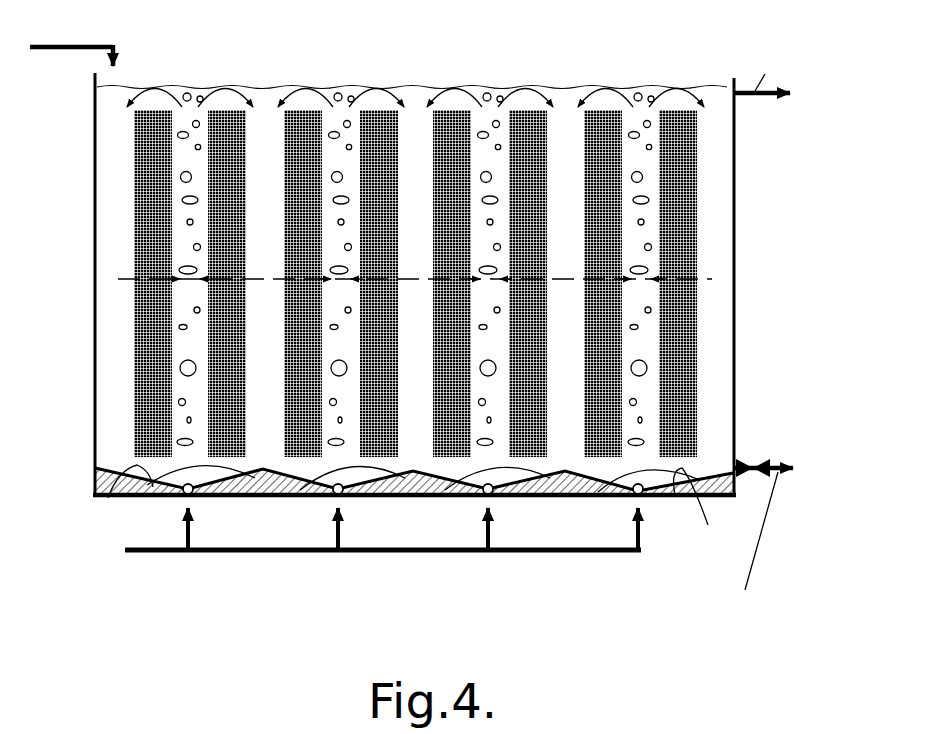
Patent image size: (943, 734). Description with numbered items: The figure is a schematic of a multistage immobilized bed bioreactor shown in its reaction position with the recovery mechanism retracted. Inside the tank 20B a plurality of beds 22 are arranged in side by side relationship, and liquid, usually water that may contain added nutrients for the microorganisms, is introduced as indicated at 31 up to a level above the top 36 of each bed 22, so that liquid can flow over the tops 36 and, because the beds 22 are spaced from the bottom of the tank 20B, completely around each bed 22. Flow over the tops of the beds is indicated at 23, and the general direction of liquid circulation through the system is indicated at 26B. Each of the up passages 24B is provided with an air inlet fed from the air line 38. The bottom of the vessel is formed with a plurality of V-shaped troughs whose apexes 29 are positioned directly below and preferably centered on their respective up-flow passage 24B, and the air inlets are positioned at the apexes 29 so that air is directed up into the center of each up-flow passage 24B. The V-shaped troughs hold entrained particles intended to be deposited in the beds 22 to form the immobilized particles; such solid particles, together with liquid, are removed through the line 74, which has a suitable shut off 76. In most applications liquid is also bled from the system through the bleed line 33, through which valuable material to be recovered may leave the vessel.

The tank 20B is at (736, 186).
The bed 22 is at (227, 250).
The liquid overflow 23 is at (157, 92).
The up-flow passage 24B is at (335, 408).
The liquid flow 26B is at (262, 378).
The apex 29 is at (612, 498).
The liquid introduction point 31 is at (92, 49).
The bleed line 33 is at (728, 75).
The top of bed 36 is at (650, 119).
The air line 38 is at (225, 553).
The solids removal line 74 is at (770, 472).
The shut off 76 is at (760, 462).